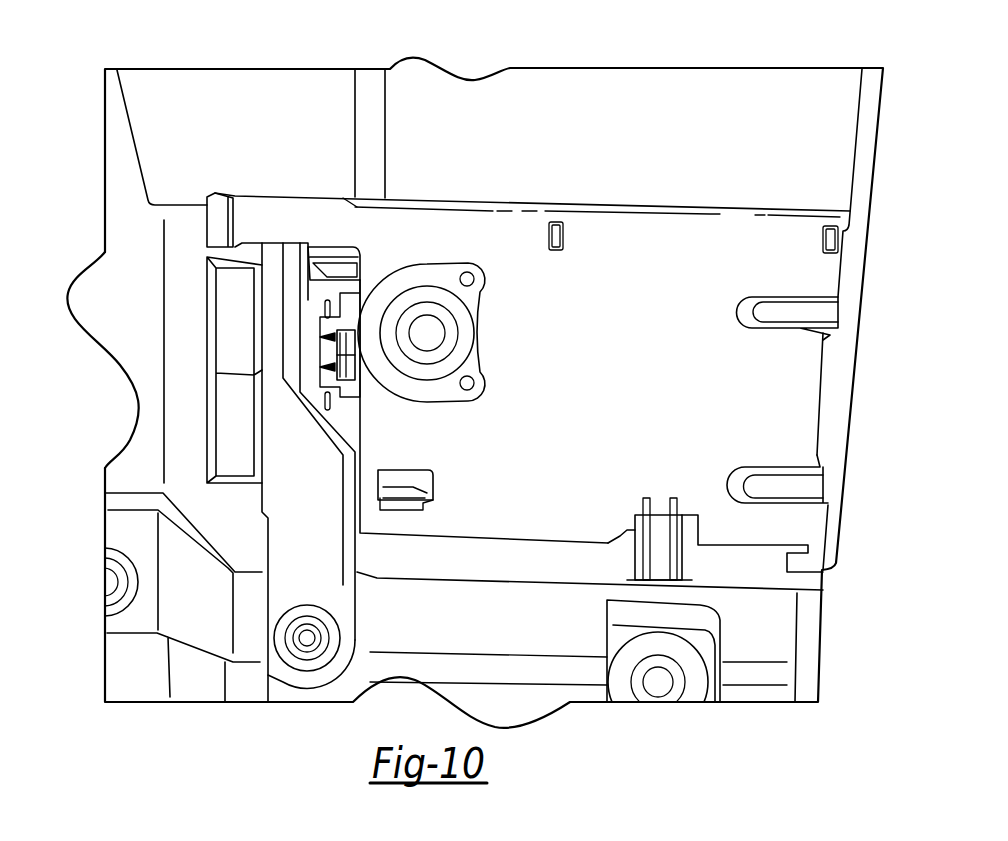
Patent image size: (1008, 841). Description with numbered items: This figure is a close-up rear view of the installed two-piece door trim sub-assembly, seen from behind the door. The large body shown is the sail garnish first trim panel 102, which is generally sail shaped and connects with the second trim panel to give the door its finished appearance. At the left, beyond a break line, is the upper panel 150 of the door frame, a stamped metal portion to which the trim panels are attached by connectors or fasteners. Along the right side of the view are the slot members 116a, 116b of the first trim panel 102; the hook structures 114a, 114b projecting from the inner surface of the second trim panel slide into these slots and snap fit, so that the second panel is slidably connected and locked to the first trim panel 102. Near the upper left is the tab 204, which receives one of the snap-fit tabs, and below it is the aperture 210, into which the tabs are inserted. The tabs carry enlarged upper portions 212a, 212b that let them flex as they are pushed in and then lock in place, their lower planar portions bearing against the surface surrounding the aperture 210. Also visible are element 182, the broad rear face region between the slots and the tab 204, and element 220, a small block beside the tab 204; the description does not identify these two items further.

The first trim panel 102 is at (567, 105).
The upper panel 150 is at (132, 335).
The mounting panel 182 is at (622, 362).
The retention block 220 is at (223, 217).
The tab 204 is at (325, 253).
The upper portion 212a is at (360, 263).
The aperture 210 is at (410, 480).
The upper portion 212b is at (407, 513).
The slot member 116a is at (745, 305).
The hook structure 114a is at (783, 312).
The slot member 116b is at (742, 484).
The hook structure 114b is at (777, 483).